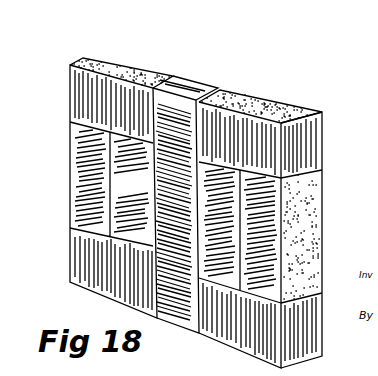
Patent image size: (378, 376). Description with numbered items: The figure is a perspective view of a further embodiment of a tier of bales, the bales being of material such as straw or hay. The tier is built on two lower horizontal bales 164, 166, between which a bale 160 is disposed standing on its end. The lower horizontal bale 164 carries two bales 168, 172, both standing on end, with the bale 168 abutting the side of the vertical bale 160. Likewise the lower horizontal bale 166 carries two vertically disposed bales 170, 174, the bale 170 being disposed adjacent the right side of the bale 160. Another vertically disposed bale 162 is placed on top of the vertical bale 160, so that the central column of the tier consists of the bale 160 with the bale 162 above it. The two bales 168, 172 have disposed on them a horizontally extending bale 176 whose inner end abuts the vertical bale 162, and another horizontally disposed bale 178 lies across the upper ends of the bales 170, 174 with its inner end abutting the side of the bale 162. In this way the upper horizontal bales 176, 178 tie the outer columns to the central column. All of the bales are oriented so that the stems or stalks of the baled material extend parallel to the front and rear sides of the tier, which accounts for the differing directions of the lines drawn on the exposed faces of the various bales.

The bale 160 is at (155, 320).
The vertically disposed bale 162 is at (220, 63).
The lower horizontal bale 164 is at (78, 253).
The lower horizontal bale 166 is at (283, 323).
The bale 168 is at (111, 188).
The vertically disposed bale 170 is at (232, 216).
The bale 172 is at (74, 134).
The vertically disposed bale 174 is at (308, 266).
The horizontally extending bale 176 is at (108, 60).
The horizontally disposed bale 178 is at (256, 92).